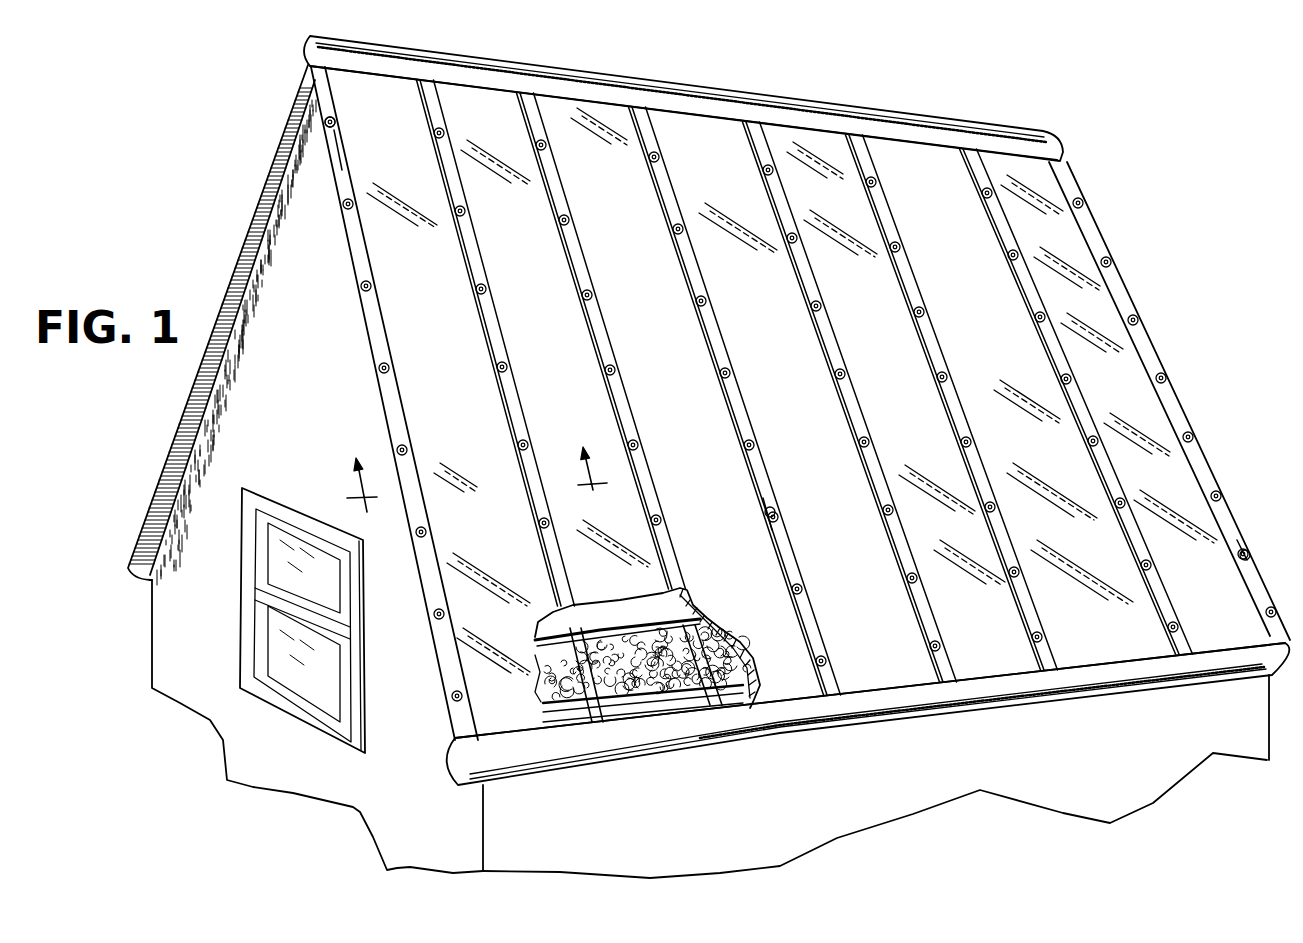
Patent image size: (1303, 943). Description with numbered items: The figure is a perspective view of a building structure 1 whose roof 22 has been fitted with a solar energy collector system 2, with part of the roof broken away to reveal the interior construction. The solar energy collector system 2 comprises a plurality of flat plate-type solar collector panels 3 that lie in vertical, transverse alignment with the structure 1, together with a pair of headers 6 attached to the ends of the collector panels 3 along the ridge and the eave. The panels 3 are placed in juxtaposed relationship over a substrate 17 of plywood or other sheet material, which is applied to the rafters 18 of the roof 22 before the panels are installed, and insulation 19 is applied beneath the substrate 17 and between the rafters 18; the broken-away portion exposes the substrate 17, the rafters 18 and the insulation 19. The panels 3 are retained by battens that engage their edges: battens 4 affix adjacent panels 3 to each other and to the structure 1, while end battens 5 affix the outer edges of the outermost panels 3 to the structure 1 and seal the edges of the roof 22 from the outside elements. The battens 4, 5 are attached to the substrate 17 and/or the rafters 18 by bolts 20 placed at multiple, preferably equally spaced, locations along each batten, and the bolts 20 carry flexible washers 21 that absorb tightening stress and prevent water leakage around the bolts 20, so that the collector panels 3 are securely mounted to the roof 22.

The building structure 1 is at (140, 682).
The solar energy collector system 2 is at (942, 178).
The solar collector panels 3 is at (485, 118).
The battens 4 is at (477, 491).
The end battens 5 is at (387, 408).
The headers 6 is at (943, 132).
The substrate 17 is at (637, 610).
The rafters 18 is at (596, 725).
The insulation 19 is at (681, 686).
The bolts 20 is at (337, 142).
The flexible washers 21 is at (332, 120).
The roof 22 is at (238, 229).